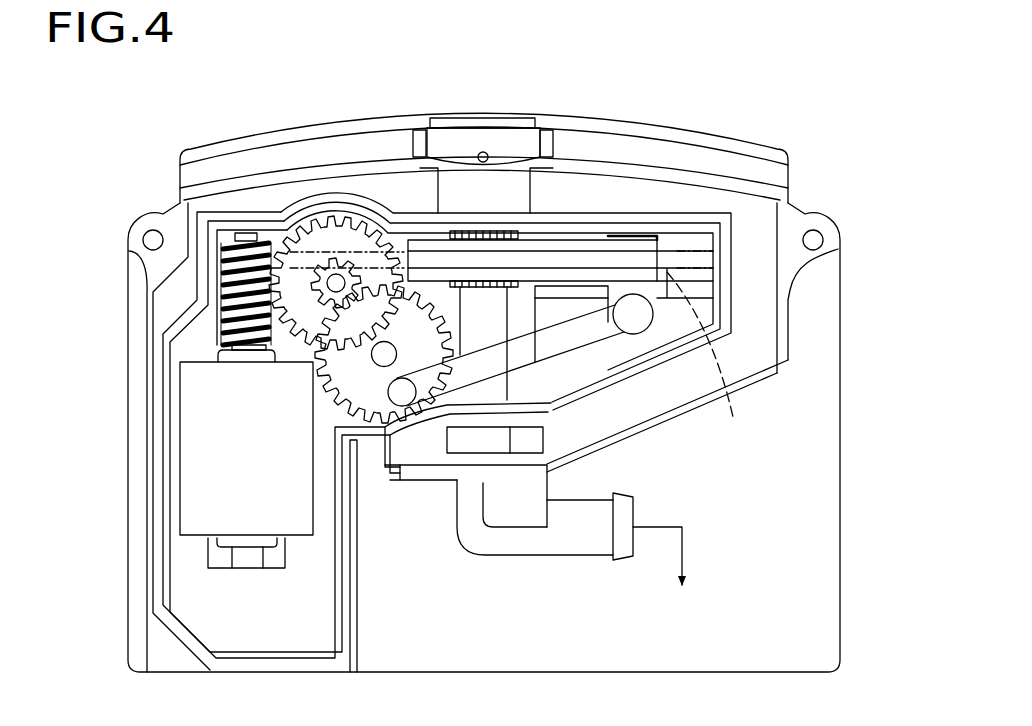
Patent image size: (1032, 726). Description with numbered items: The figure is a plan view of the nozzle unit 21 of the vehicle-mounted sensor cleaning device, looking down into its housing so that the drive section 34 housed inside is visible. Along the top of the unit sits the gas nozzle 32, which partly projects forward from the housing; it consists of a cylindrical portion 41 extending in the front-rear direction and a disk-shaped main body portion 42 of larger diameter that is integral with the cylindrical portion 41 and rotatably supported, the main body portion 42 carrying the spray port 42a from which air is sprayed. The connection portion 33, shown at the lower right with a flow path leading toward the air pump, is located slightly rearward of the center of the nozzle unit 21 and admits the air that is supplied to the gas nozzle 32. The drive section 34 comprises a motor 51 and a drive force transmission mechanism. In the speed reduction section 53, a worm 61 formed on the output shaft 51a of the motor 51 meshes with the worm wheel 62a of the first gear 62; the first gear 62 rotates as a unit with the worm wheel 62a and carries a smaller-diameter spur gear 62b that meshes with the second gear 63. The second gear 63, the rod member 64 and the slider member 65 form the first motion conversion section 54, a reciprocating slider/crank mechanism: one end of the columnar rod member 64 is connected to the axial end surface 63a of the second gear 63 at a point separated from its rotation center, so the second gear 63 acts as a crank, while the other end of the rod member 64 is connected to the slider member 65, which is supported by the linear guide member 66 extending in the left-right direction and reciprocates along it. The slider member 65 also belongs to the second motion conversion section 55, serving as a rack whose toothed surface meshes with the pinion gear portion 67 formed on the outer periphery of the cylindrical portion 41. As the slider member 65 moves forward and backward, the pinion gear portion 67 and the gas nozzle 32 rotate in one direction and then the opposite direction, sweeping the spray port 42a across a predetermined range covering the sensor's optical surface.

The nozzle unit 21 is at (848, 195).
The gas nozzle 32 is at (490, 135).
The connection portion 33 is at (562, 548).
The drive section 34 is at (160, 512).
The cylindrical portion 41 is at (488, 390).
The main body portion 42 is at (517, 145).
The spray port 42a is at (480, 152).
The motor 51 is at (190, 446).
The output shaft 51a is at (245, 352).
The speed reduction section 53 is at (222, 234).
The first motion conversion section 54 is at (511, 379).
The second motion conversion section 55 is at (442, 234).
The worm 61 is at (221, 298).
The first gear 62 is at (306, 252).
The worm wheel 62a is at (326, 220).
The spur gear 62b is at (322, 305).
The second gear 63 is at (340, 402).
The axial end surface 63a is at (412, 465).
The rod member 64 is at (572, 337).
The slider member 65 is at (594, 240).
The guide member 66 is at (705, 357).
The pinion gear portion 67 is at (544, 236).